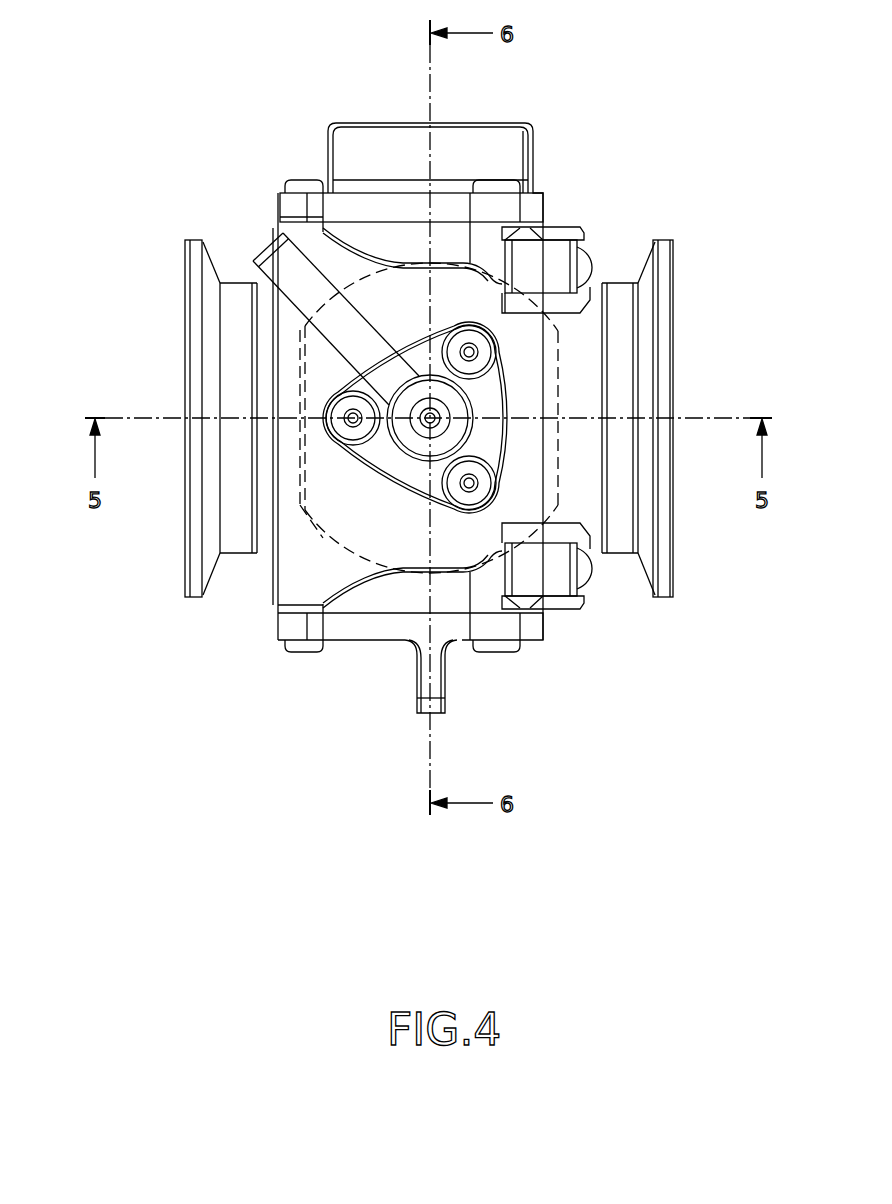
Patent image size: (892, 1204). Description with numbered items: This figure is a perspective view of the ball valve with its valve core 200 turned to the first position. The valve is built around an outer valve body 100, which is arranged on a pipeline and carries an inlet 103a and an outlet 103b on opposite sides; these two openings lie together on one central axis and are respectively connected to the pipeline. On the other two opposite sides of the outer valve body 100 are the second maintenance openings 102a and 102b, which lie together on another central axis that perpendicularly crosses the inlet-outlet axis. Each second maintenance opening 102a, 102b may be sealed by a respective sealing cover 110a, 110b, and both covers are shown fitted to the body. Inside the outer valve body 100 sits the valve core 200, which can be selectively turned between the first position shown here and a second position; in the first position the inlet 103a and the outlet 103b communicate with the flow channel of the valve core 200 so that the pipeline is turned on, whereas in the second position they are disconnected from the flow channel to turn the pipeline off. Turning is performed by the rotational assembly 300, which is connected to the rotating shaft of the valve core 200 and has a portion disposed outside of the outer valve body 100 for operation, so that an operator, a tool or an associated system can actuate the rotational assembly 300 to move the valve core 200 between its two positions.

The outer valve body 100 is at (560, 218).
The second maintenance opening 102a is at (375, 218).
The second maintenance opening 102b is at (368, 615).
The inlet 103a is at (680, 326).
The outlet 103b is at (180, 318).
The sealing cover 110a is at (390, 140).
The sealing cover 110b is at (423, 678).
The valve core 200 is at (347, 270).
The rotational assembly 300 is at (273, 262).